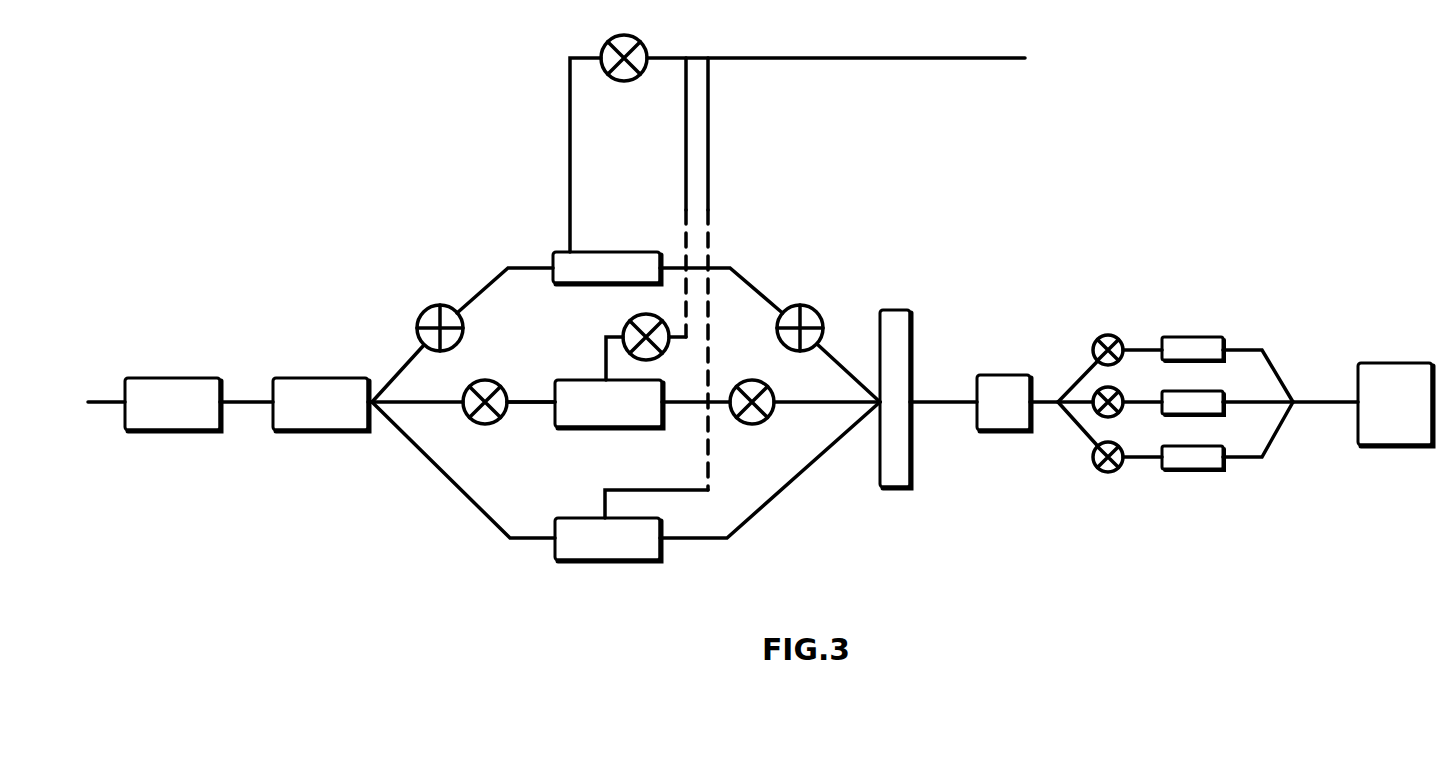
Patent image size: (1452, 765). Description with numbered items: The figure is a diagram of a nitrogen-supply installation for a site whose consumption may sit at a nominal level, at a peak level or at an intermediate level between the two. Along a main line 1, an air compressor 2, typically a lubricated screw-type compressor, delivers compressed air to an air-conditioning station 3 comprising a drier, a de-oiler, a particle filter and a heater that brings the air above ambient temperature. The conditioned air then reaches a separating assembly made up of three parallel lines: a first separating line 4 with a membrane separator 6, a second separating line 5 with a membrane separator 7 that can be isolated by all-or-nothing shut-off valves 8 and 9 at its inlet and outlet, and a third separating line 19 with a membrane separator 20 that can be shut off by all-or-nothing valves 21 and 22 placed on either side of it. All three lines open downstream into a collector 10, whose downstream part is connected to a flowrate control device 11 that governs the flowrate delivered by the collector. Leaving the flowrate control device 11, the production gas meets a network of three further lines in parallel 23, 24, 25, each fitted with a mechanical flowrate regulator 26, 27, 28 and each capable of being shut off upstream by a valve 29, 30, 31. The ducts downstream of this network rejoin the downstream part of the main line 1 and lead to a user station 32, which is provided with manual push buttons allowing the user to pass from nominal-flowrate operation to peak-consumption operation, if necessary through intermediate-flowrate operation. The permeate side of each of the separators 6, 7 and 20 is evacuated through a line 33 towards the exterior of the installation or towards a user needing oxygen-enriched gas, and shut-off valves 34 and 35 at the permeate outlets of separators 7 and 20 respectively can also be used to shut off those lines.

The main line 1 is at (100, 396).
The air compressor 2 is at (150, 378).
The air-conditioning station 3 is at (332, 378).
The separating line 4 is at (465, 502).
The separating line 5 is at (528, 405).
The membrane separator 6 is at (617, 563).
The membrane separator 7 is at (598, 430).
The shut-off valve 8 is at (495, 380).
The shut-off valve 9 is at (758, 378).
The collector 10 is at (893, 488).
The flowrate control device 11 is at (1013, 375).
The third separating line 19 is at (626, 335).
The membrane separator 20 is at (635, 252).
The valve 21 is at (438, 303).
The valve 22 is at (815, 310).
The line 23 is at (1257, 345).
The line 24 is at (1270, 404).
The line 25 is at (1253, 458).
The mechanical flowrate regulator 26 is at (1187, 337).
The mechanical flowrate regulator 27 is at (1197, 391).
The mechanical flowrate regulator 28 is at (1175, 470).
The valve 29 is at (1115, 335).
The valve 30 is at (1112, 387).
The valve 31 is at (1115, 472).
The user station 32 is at (1380, 360).
The line 33 is at (893, 58).
The shut-off valve 34 is at (631, 316).
The shut-off valve 35 is at (608, 40).